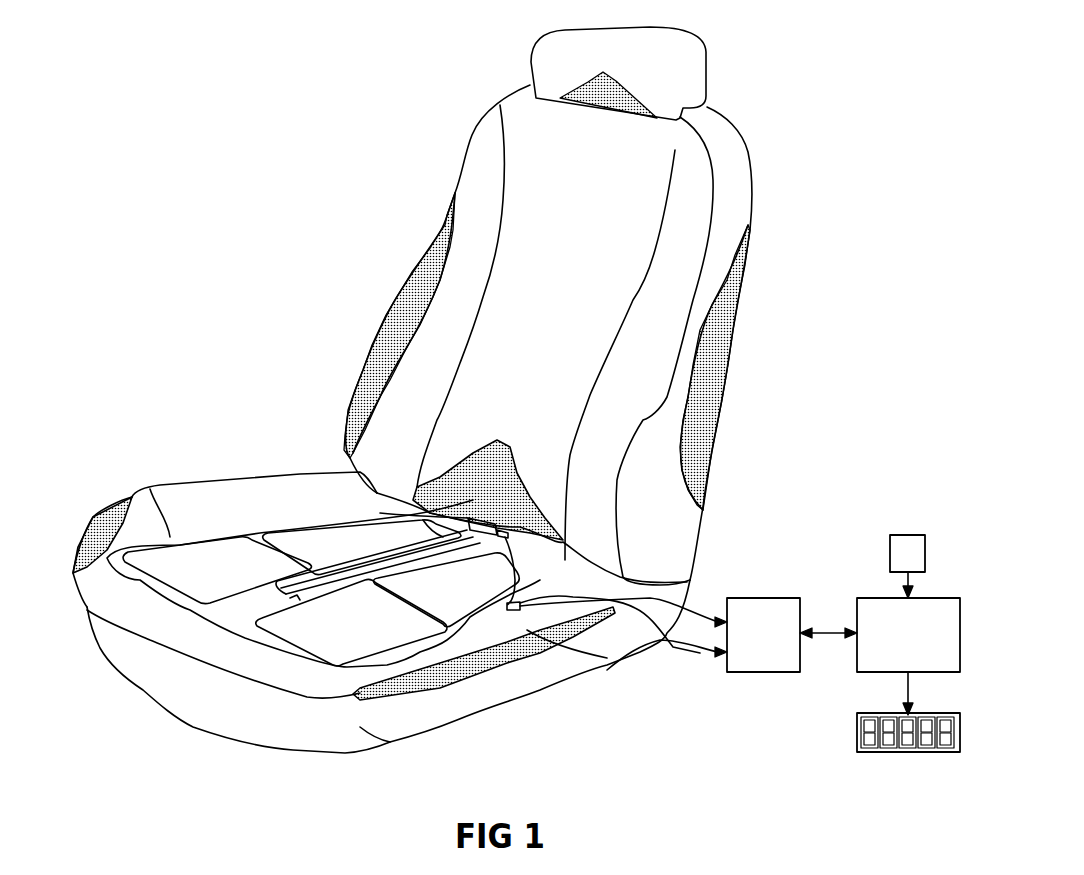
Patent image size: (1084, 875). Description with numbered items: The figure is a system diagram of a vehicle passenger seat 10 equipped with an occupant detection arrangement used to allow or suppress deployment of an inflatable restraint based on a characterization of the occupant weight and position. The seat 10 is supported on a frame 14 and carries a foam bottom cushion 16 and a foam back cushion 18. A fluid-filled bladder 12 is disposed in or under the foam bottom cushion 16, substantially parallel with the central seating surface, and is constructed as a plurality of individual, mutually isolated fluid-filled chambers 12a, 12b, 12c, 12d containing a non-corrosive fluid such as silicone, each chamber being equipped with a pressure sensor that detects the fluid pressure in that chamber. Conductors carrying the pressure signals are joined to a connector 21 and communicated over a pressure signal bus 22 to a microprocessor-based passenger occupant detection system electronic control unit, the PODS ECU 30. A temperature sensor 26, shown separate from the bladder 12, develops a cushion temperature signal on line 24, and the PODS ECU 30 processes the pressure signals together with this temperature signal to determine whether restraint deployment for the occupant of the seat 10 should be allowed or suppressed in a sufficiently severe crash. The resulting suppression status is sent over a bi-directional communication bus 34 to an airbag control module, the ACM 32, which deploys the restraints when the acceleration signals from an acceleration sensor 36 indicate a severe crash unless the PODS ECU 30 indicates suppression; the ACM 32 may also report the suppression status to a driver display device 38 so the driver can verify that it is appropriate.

The vehicle passenger seat 10 is at (302, 405).
The bladder 12 is at (280, 600).
The fluid-filled chamber 12a is at (220, 555).
The fluid-filled chamber 12b is at (380, 637).
The fluid-filled chamber 12c is at (447, 595).
The fluid-filled chamber 12d is at (313, 528).
The frame 14 is at (390, 743).
The foam bottom cushion 16 is at (150, 603).
The foam back cushion 18 is at (718, 262).
The connector 21 is at (410, 502).
The pressure signal bus 22 is at (708, 622).
The temperature signal line 24 is at (707, 653).
The temperature sensor 26 is at (607, 658).
The passenger occupant detection system electronic control unit (PODS ECU) 30 is at (765, 597).
The airbag control module (ACM) 32 is at (855, 660).
The bi-directional communication bus 34 is at (830, 627).
The acceleration sensor 36 is at (910, 533).
The driver display device 38 is at (907, 753).